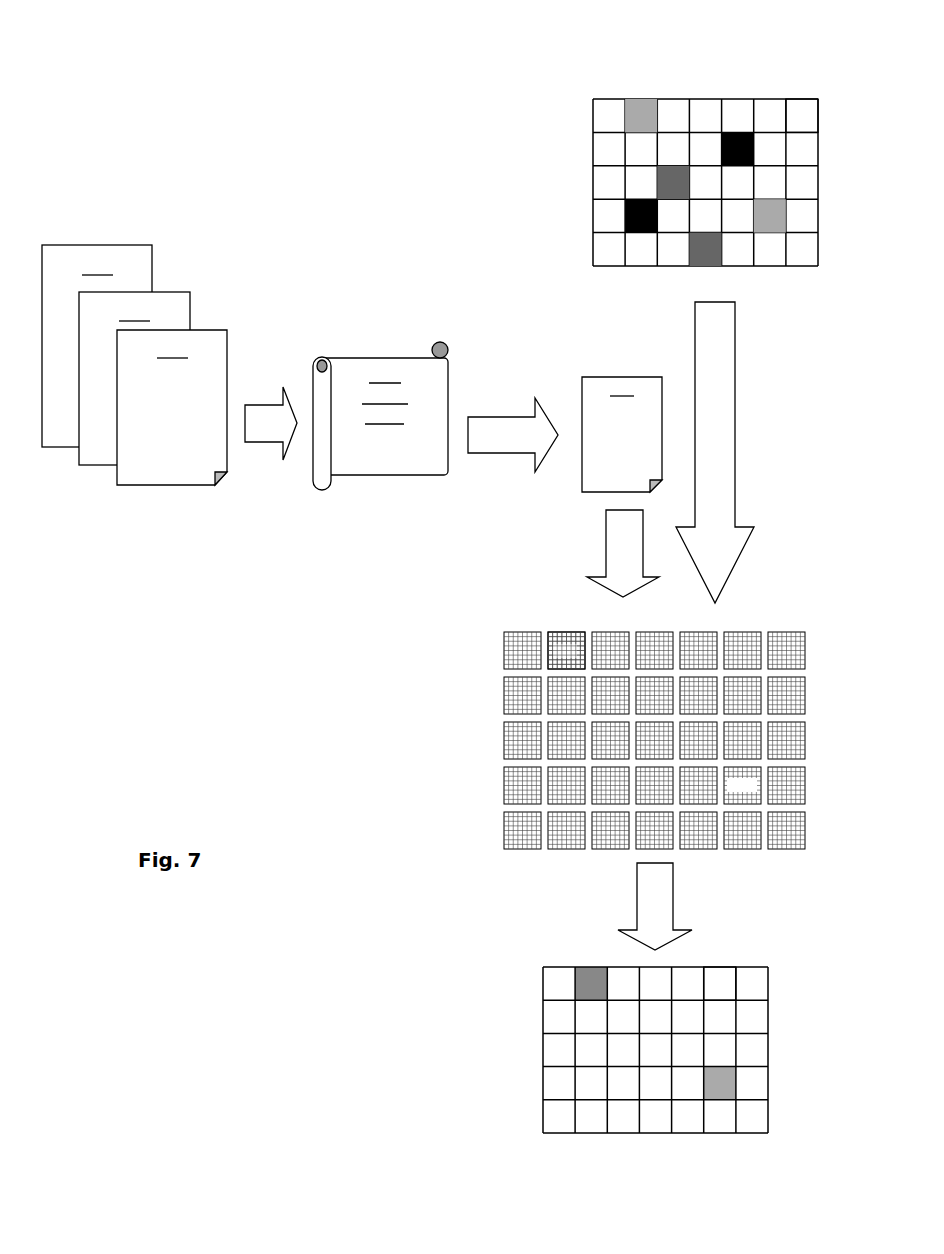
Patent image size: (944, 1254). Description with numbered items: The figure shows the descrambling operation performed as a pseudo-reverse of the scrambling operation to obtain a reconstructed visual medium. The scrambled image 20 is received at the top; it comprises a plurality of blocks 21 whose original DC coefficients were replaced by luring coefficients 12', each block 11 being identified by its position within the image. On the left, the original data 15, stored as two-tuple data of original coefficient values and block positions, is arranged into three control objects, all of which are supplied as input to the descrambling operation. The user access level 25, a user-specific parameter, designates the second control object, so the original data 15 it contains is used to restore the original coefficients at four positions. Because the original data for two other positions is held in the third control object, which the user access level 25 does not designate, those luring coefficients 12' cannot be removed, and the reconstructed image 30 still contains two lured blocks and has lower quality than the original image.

The scrambled image 20 is at (552, 106).
The blocks 21 is at (643, 104).
The block 11 is at (804, 110).
The luring coefficients 12' is at (527, 621).
The reconstructed image 30 is at (494, 1014).
The original data 15 is at (181, 454).
The user access level 25 is at (365, 340).